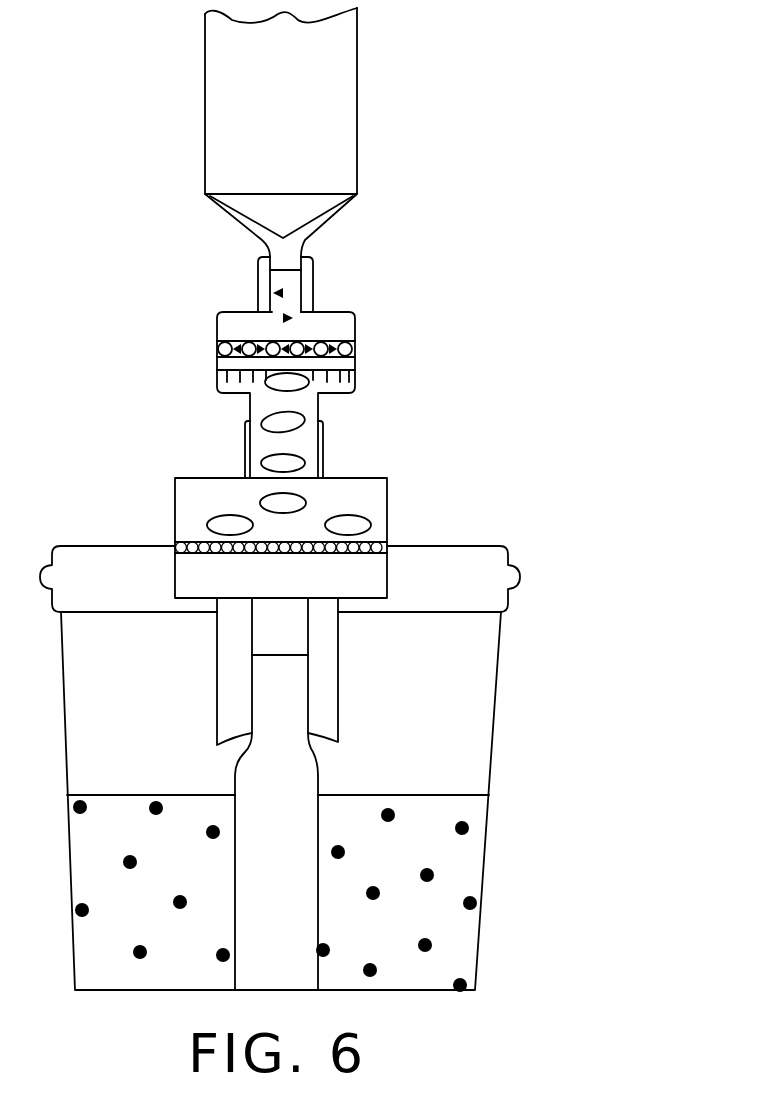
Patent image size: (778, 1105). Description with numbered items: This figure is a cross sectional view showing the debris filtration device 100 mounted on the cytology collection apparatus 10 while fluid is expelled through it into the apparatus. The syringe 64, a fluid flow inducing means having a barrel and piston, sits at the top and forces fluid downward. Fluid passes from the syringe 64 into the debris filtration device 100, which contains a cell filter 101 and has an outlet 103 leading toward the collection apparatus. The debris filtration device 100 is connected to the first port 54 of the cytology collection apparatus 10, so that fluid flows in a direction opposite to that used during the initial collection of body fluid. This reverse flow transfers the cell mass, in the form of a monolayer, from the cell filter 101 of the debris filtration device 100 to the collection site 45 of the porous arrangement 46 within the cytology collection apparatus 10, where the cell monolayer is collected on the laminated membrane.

The cytology collection apparatus 10 is at (401, 503).
The collection site 45 is at (273, 539).
The porous arrangement 46 is at (178, 548).
The first port 54 is at (324, 447).
The syringe 64 is at (374, 102).
The debris filtration device 100 is at (377, 348).
The cell filter 101 is at (232, 365).
The outlet 103 is at (302, 288).